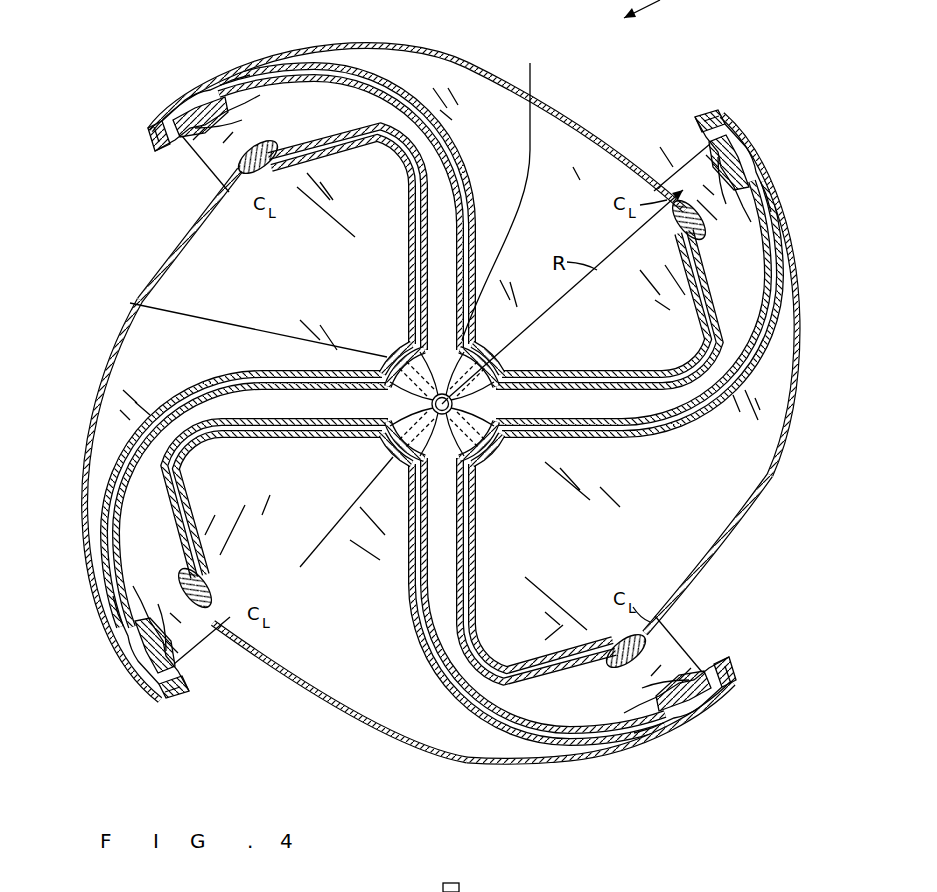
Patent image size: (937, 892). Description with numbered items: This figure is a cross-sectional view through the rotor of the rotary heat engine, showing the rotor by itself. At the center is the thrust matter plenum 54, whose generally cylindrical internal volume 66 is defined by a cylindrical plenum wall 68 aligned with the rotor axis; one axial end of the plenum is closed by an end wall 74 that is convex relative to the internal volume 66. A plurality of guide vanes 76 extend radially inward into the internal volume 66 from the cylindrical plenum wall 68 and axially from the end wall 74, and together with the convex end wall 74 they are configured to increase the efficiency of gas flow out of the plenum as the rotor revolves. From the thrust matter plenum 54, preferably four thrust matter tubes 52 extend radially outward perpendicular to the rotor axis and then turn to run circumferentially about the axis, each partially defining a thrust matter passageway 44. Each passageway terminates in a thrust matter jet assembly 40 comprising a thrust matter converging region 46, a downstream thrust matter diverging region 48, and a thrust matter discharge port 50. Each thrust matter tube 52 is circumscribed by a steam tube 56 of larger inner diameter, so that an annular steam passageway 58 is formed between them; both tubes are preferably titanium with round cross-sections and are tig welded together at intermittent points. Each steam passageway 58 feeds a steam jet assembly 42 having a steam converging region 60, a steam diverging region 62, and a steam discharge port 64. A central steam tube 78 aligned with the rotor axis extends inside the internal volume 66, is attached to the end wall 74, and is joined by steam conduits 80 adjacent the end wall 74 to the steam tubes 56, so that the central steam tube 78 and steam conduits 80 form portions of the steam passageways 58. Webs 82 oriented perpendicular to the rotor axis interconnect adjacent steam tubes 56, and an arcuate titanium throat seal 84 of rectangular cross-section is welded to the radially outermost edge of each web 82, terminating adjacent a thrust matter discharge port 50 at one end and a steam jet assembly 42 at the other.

The thrust matter jet assembly 40 is at (187, 150).
The steam jet assembly 42 is at (147, 133).
The thrust matter passageway 44 is at (455, 160).
The thrust matter converging region 46 is at (248, 115).
The thrust matter diverging region 48 is at (213, 190).
The thrust matter discharge port 50 is at (200, 167).
The thrust matter tube 52 is at (317, 83).
The thrust matter plenum 54 is at (490, 398).
The steam tube 56 is at (383, 83).
The steam passageway 58 is at (210, 93).
The steam converging region 60 is at (173, 103).
The steam diverging region 62 is at (160, 157).
The steam discharge port 64 is at (157, 147).
The internal volume 66 is at (647, 400).
The cylindrical plenum wall 68 is at (130, 303).
The end wall 74 is at (503, 189).
The guide vanes 76 is at (470, 407).
The central steam tube 78 is at (300, 560).
The steam conduits 80 is at (407, 345).
The web 82 is at (210, 255).
The throat seal 84 is at (430, 53).